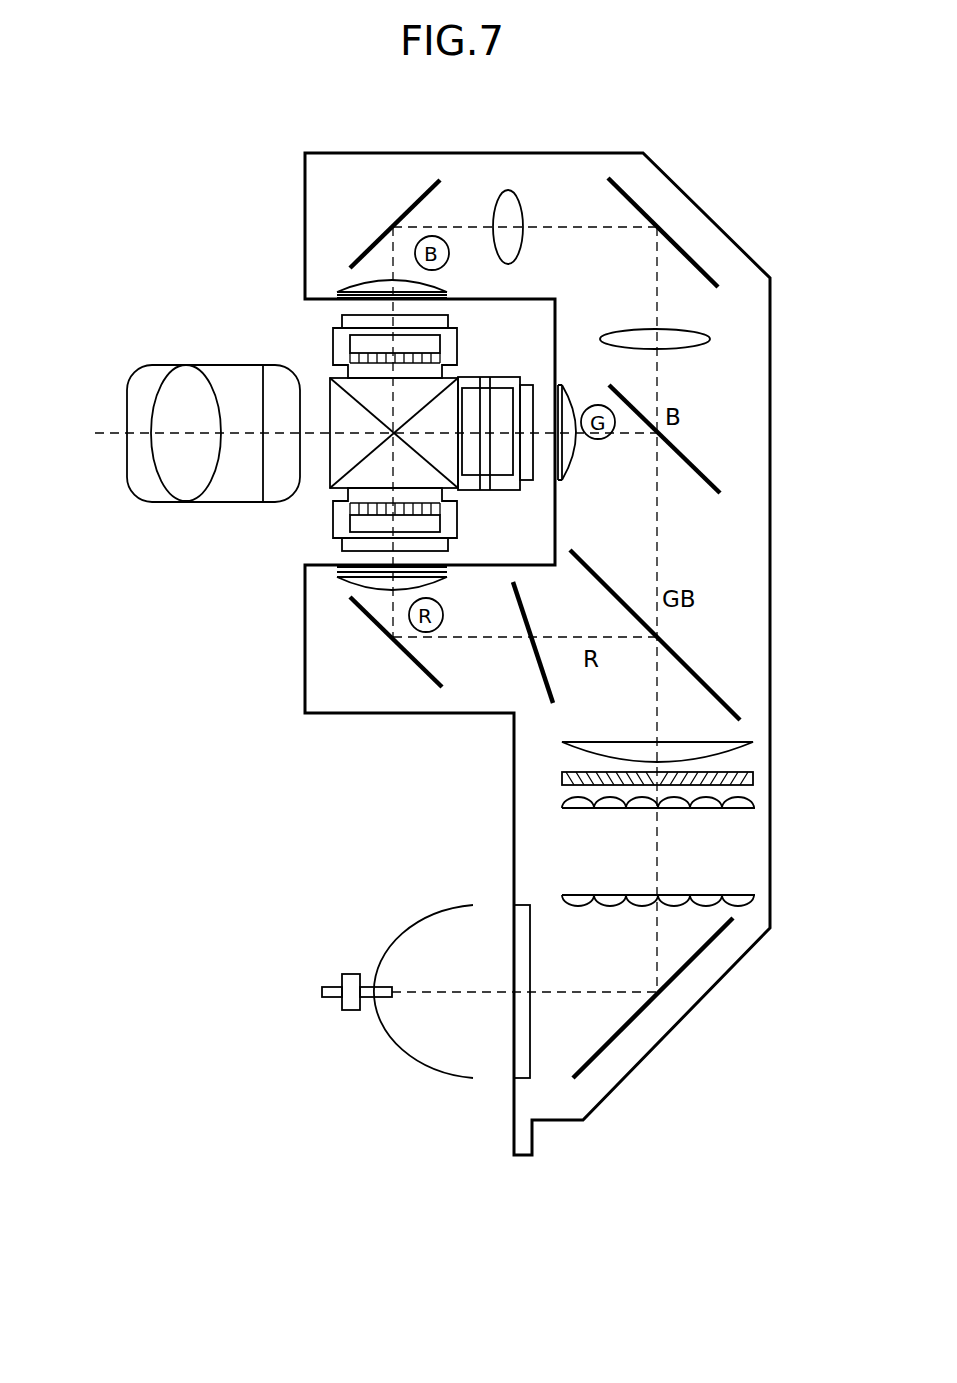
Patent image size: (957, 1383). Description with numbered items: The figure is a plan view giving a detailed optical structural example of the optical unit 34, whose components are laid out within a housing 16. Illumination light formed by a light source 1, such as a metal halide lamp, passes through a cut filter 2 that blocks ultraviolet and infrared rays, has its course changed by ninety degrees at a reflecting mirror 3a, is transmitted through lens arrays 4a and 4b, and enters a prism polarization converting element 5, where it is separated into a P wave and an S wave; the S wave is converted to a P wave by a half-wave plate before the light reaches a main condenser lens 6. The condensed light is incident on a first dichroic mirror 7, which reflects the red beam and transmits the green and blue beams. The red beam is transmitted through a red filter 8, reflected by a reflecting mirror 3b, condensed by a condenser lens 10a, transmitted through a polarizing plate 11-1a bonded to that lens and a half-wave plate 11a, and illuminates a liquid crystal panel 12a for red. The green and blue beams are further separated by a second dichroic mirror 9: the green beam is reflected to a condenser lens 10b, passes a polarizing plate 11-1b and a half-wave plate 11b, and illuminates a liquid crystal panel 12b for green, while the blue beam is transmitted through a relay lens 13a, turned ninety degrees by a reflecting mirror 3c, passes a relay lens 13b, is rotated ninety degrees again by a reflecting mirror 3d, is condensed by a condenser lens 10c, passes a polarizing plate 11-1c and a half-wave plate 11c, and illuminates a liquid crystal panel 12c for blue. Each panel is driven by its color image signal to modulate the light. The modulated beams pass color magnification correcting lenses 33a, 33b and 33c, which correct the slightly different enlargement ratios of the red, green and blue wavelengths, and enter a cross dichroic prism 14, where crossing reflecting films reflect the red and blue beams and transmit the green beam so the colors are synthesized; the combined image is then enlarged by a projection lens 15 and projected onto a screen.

The light source 1 is at (398, 1058).
The cut filter 2 is at (520, 1080).
The reflecting mirror 3a is at (635, 1020).
The reflecting mirror 3b is at (407, 658).
The reflecting mirror 3c is at (648, 216).
The reflecting mirror 3d is at (368, 247).
The lens array 4a is at (755, 895).
The lens array 4b is at (755, 808).
The prism polarization converting element 5 is at (755, 779).
The main condenser lens 6 is at (740, 752).
The first dichroic mirror 7 is at (715, 688).
The red filter 8 is at (533, 660).
The second dichroic mirror 9 is at (700, 470).
The condenser lens 10a is at (347, 583).
The condenser lens 10b is at (574, 462).
The condenser lens 10c is at (340, 282).
The polarizing plate 11-1a is at (340, 578).
The polarizing plate 11-1b is at (565, 482).
The polarizing plate 11-1c is at (337, 293).
The half-wave plate 11a is at (338, 569).
The half-wave plate 11b is at (560, 383).
The half-wave plate 11c is at (328, 299).
The liquid crystal panel 12a is at (333, 503).
The liquid crystal panel 12b is at (531, 385).
The liquid crystal panel 12c is at (342, 320).
The relay lens 13a is at (712, 340).
The relay lens 13b is at (523, 243).
The cross dichroic prism 14 is at (330, 472).
The projection lens 15 is at (127, 400).
The housing 16 is at (515, 152).
The color magnification correcting lens 33a is at (422, 500).
The color magnification correcting lens 33b is at (468, 486).
The color magnification correcting lens 33c is at (460, 338).
The optical unit 34 is at (322, 838).